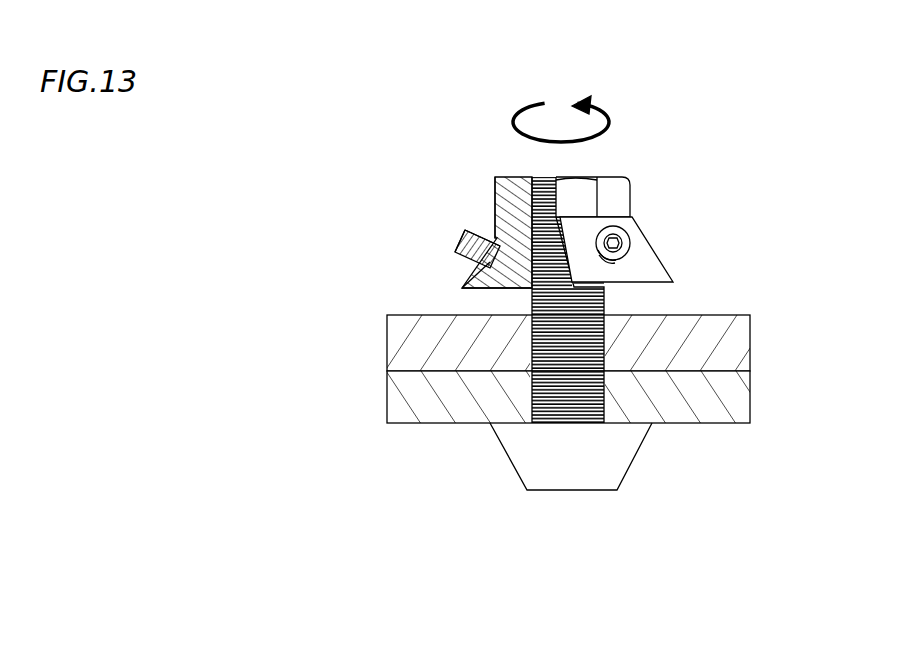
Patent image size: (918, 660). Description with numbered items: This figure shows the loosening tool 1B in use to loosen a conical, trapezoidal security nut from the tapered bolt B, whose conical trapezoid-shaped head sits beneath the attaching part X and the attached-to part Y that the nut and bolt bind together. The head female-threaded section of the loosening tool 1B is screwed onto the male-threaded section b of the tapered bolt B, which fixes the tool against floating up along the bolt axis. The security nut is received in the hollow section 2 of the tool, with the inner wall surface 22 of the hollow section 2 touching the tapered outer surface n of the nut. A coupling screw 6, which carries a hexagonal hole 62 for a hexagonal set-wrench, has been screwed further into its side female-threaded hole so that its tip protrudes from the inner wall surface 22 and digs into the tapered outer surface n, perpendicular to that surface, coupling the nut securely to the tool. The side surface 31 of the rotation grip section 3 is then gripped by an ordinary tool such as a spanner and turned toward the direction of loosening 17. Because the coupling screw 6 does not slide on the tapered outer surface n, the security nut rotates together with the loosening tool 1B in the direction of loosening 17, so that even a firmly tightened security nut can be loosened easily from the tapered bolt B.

The loosening tool 1B is at (412, 160).
The direction of loosening 17 is at (592, 106).
The side surface 31 is at (633, 197).
The rotation grip section 3 is at (578, 213).
The coupling screw 6 is at (630, 243).
The hexagonal hole 62 is at (465, 236).
The tapered outer surface n is at (495, 236).
The inner wall surface 22 is at (500, 289).
The hollow section 2 is at (662, 262).
The male-threaded section b is at (600, 292).
The attaching part X is at (712, 343).
The attached-to part Y is at (730, 423).
The tapered bolt B is at (570, 490).